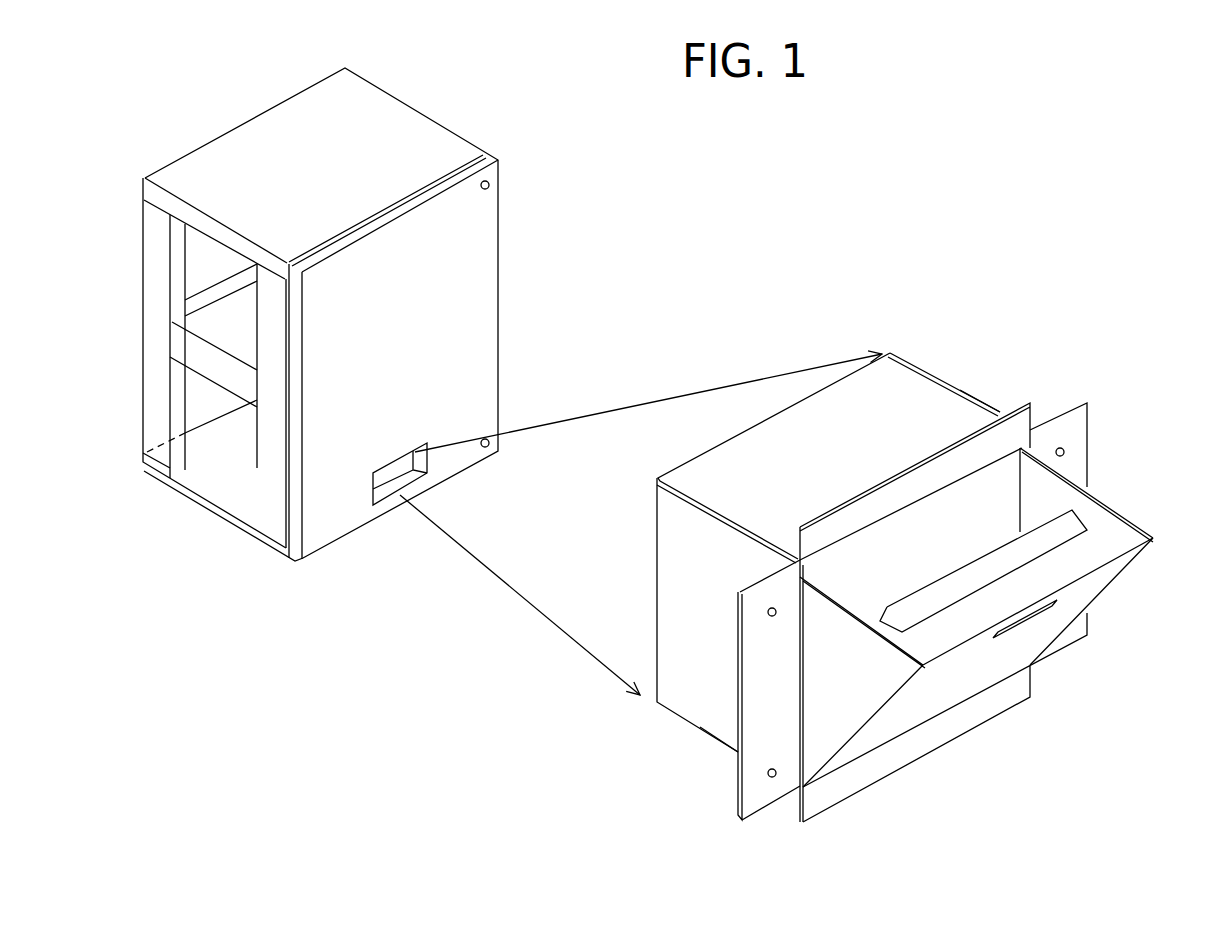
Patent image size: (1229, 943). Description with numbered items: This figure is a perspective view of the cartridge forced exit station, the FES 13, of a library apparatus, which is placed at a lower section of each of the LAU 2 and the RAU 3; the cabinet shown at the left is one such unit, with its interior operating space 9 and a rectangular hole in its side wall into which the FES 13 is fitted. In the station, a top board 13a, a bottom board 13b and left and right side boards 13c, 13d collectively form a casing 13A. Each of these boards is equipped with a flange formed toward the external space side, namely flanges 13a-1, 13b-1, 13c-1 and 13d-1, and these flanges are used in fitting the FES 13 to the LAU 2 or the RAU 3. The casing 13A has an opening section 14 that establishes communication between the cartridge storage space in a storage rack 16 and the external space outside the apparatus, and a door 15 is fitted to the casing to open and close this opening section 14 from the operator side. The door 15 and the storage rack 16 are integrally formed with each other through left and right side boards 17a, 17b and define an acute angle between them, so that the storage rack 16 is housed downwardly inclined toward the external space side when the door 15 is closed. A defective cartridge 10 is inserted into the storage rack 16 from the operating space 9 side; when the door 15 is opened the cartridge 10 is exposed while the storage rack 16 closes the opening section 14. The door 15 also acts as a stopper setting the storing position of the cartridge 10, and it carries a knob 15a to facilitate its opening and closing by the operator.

The LAU 2 is at (469, 127).
The RAU 3 is at (512, 381).
The operating space 9 is at (218, 440).
The defective cartridge 10 is at (1072, 525).
The FES 13 is at (972, 378).
The casing 13A is at (652, 488).
The top board 13a is at (730, 462).
The flange 13a-1 is at (870, 507).
The bottom board 13b is at (722, 745).
The flange 13b-1 is at (887, 763).
The left side board 13c is at (673, 702).
The flange 13c-1 is at (750, 645).
The right side board 13d is at (987, 403).
The flange 13d-1 is at (1080, 447).
The opening section 14 is at (833, 568).
The door 15 is at (975, 673).
The knob 15a is at (1030, 620).
The storage rack 16 is at (992, 483).
The left side board 17a is at (880, 687).
The right side board 17b is at (1088, 473).